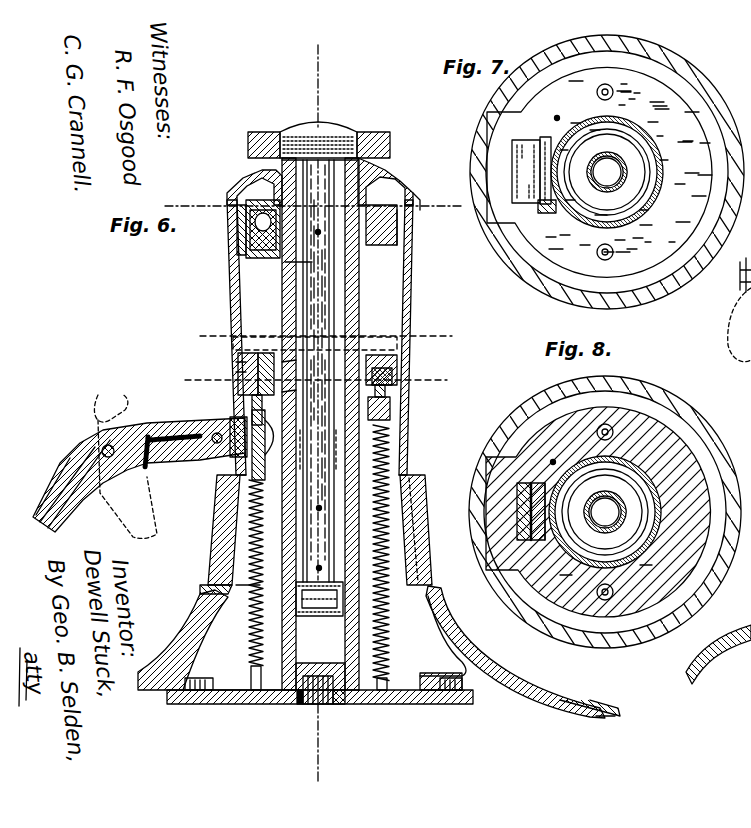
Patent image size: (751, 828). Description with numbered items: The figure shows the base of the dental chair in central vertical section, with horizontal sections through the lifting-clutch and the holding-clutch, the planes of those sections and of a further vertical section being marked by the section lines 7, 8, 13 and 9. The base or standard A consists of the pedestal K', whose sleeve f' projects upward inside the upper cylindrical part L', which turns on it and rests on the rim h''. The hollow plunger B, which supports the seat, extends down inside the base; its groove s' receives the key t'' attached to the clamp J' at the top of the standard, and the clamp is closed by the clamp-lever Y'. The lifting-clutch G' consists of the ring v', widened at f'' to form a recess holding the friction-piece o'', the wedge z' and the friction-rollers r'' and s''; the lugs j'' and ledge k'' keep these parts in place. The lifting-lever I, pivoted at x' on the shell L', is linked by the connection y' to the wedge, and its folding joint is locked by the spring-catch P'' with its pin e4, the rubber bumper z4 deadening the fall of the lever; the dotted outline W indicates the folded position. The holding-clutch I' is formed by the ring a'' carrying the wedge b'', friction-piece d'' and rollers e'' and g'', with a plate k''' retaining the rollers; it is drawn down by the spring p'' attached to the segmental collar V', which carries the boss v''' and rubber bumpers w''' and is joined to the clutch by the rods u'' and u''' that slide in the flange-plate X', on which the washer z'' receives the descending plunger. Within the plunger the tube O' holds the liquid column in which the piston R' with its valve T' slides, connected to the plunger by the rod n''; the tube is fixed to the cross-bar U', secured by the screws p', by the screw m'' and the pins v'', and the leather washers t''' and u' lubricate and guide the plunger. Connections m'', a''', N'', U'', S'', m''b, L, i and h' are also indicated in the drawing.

In FIG. 6, the section line 9- 9 is at (317, 415).
In FIG. 6, the cap U'' is at (340, 145).
In FIG. 6, the plate k''' is at (318, 127).
In FIG. 6, the screw m'' is at (244, 182).
In FIG. 6, the passage a''' is at (299, 172).
In FIG. 6, the clamp J' is at (390, 179).
In FIG. 6, the casing head N'' is at (434, 187).
In FIG. 6, the key or pin t'' is at (421, 205).
In FIG. 6, the section line 13- 13 is at (310, 204).
In FIG. 6, the casing L is at (248, 290).
In FIG. 7, the casing L is at (607, 172).
In FIG. 8, the casing L is at (605, 512).
In FIG. 6, the upper cylindrical part of the base L' is at (415, 337).
In FIG. 6, the washer z'' is at (281, 445).
In FIG. 6, the plunger B is at (360, 300).
In FIG. 7, the plunger B is at (610, 171).
In FIG. 8, the plunger B is at (615, 512).
In FIG. 6, the tube O' is at (345, 371).
In FIG. 7, the tube O' is at (629, 172).
In FIG. 8, the tube O' is at (628, 512).
In FIG. 6, the friction-piece d'' is at (312, 400).
In FIG. 6, the friction-rollers e'' is at (306, 263).
In FIG. 6, the rod or tube n'' is at (318, 450).
In FIG. 7, the rod or tube n'' is at (607, 172).
In FIG. 8, the rod or tube n'' is at (605, 512).
In FIG. 6, the friction-piece o'' is at (300, 353).
In FIG. 6, the projecting ledge k'' is at (301, 383).
In FIG. 6, the piston R' is at (359, 599).
In FIG. 6, the bearing block S'' is at (320, 665).
In FIG. 6, the lower nut m''b is at (323, 701).
In FIG. 6, the boss v''' is at (304, 718).
In FIG. 6, the pins v'' is at (355, 712).
In FIG. 6, the cross-bar U' is at (320, 703).
In FIG. 6, the wedge b'' is at (262, 249).
In FIG. 7, the wedge b'' is at (563, 119).
In FIG. 8, the wedge b'' is at (557, 465).
In FIG. 6, the friction-rollers g'' is at (217, 228).
In FIG. 6, the section line 7- 7 is at (326, 338).
In FIG. 6, the friction-rollers r'' is at (248, 356).
In FIG. 8, the friction-rollers r'' is at (533, 526).
In FIG. 6, the friction-rollers s'' is at (269, 356).
In FIG. 8, the friction-rollers s'' is at (553, 526).
In FIG. 6, the section line 8- 8 is at (313, 380).
In FIG. 6, the widened portion of ring f'' is at (191, 353).
In FIG. 7, the widened portion of ring f'' is at (586, 172).
In FIG. 8, the widened portion of ring f'' is at (585, 512).
In FIG. 6, the wedge z' is at (208, 356).
In FIG. 8, the wedge z' is at (525, 498).
In FIG. 6, the stem i is at (252, 402).
In FIG. 6, the lifting-lever I is at (139, 475).
In FIG. 6, the spring-catch P'' is at (198, 431).
In FIG. 6, the arm (dotted) W is at (100, 440).
In FIG. 6, the connection y' is at (136, 426).
In FIG. 6, the pin e4 is at (175, 424).
In FIG. 6, the rubber bumper z4 is at (152, 468).
In FIG. 6, the pivot x' is at (203, 457).
In FIG. 6, the ring a'' is at (381, 225).
In FIG. 6, the holding-clutch I' is at (414, 227).
In FIG. 6, the lifting-clutch G' is at (403, 364).
In FIG. 7, the lifting-clutch G' is at (651, 234).
In FIG. 8, the lifting-clutch G' is at (654, 561).
In FIG. 6, the ring v' is at (382, 377).
In FIG. 7, the ring v' is at (575, 241).
In FIG. 8, the ring v' is at (568, 579).
In FIG. 6, the rubber bumpers w''' is at (421, 389).
In FIG. 6, the segmental collar V' is at (410, 409).
In FIG. 6, the valve T' is at (396, 557).
In FIG. 6, the leather washer u' is at (239, 585).
In FIG. 6, the sleeve f' is at (324, 530).
In FIG. 6, the spring p'' is at (431, 530).
In FIG. 6, the rim or flange h'' is at (201, 583).
In FIG. 7, the rim or flange h'' is at (531, 170).
In FIG. 6, the base or standard A is at (188, 612).
In FIG. 6, the pedestal K' is at (520, 652).
In FIG. 6, the flange-plate X' is at (430, 680).
In FIG. 6, the screws p' is at (531, 719).
In FIG. 7, the longitudinal slot or groove s' is at (627, 172).
In FIG. 8, the longitudinal slot or groove s' is at (628, 512).
In FIG. 7, the rod u''' is at (621, 91).
In FIG. 8, the rod u''' is at (621, 431).
In FIG. 7, the rod u'' is at (620, 251).
In FIG. 8, the rod u'' is at (620, 591).
In FIG. 7, the lugs j'' is at (547, 223).
In FIG. 7, the leather washer t''' is at (735, 272).
In FIG. 7, the clamp-lever Y' is at (731, 325).
In FIG. 8, the rim h' is at (718, 634).